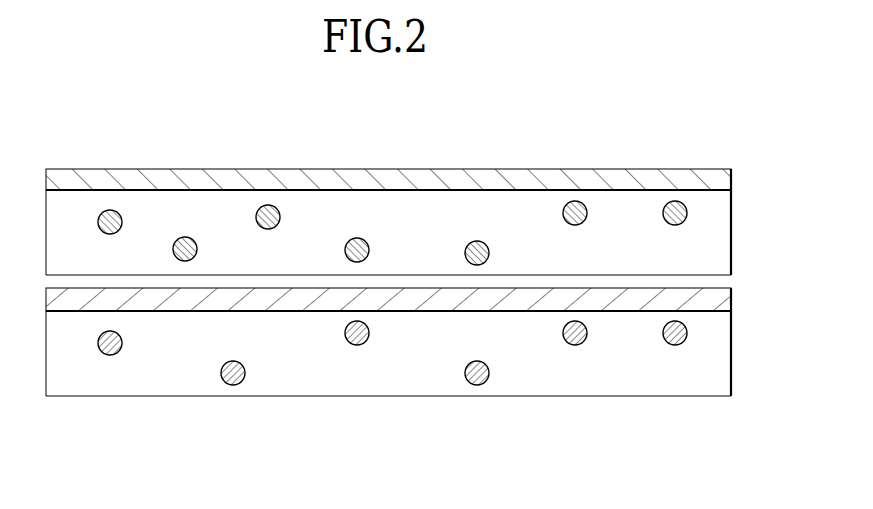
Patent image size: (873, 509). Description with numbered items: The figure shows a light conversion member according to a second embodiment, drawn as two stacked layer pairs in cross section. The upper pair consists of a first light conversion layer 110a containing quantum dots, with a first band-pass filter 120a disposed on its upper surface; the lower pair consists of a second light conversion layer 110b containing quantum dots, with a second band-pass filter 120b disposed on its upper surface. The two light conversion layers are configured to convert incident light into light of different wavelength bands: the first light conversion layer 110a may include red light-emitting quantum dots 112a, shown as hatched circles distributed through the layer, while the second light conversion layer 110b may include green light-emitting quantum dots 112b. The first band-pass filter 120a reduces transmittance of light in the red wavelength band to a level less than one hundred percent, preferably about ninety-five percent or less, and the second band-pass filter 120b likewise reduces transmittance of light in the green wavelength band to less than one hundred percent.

The first light conversion layer 110a is at (722, 253).
The red light-emitting quantum dots 112a is at (687, 209).
The first band-pass filter 120a is at (720, 177).
The second light conversion layer 110b is at (722, 373).
The green light-emitting quantum dots 112b is at (687, 329).
The second band-pass filter 120b is at (720, 297).